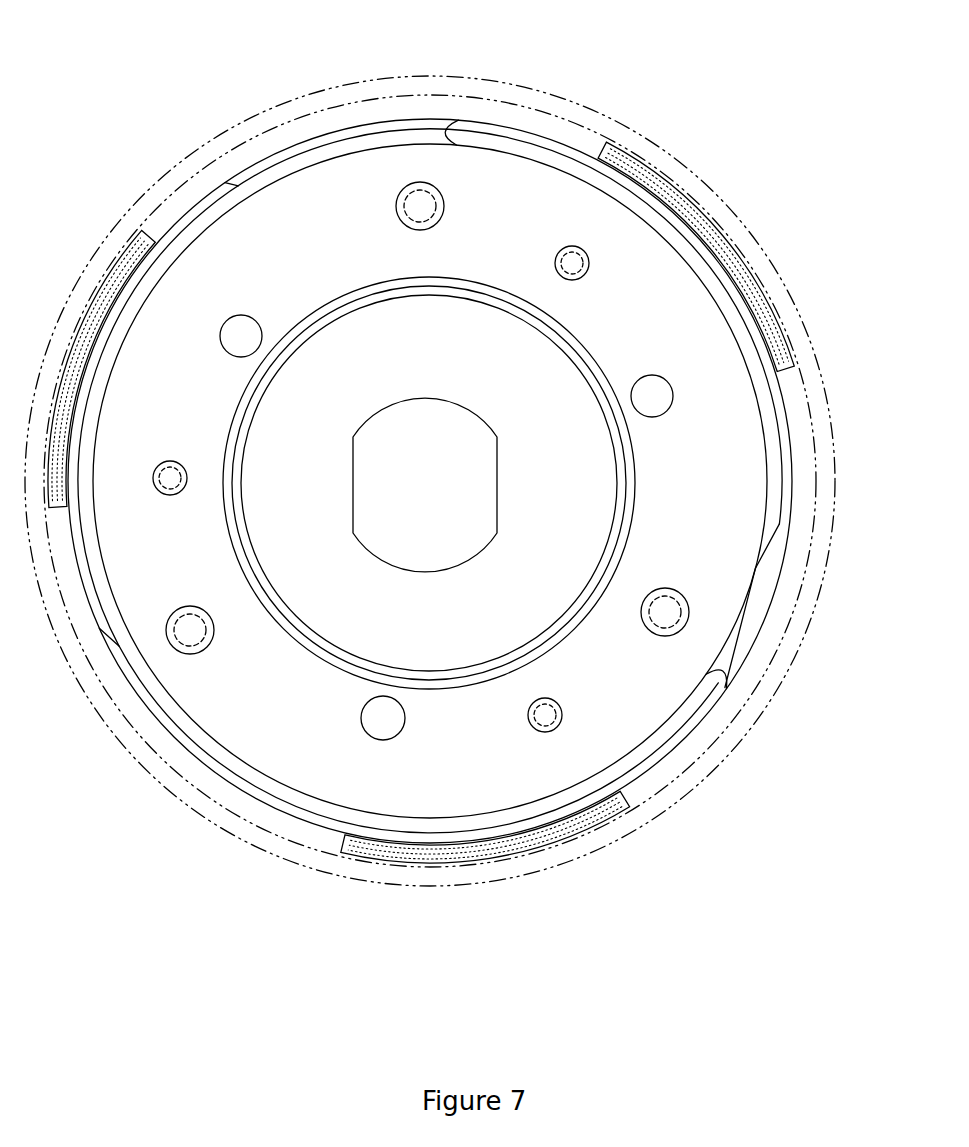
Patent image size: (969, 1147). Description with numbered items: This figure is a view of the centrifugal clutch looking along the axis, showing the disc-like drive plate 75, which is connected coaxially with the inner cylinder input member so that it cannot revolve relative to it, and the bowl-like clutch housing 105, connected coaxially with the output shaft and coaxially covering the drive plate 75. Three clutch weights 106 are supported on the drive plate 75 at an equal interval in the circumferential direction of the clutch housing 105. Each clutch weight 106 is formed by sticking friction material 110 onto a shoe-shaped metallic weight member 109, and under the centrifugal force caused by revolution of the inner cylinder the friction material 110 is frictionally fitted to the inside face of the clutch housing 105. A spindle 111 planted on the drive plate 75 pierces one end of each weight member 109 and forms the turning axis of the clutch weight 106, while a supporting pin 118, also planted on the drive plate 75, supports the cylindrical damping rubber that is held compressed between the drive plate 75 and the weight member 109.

The drive plate 75 is at (430, 153).
The clutch housing 105 is at (543, 87).
The clutch weight 106 is at (228, 173).
The weight member 109 is at (213, 208).
The friction material 110 is at (87, 323).
The spindle 111 is at (396, 212).
The supporting pin 118 is at (589, 266).